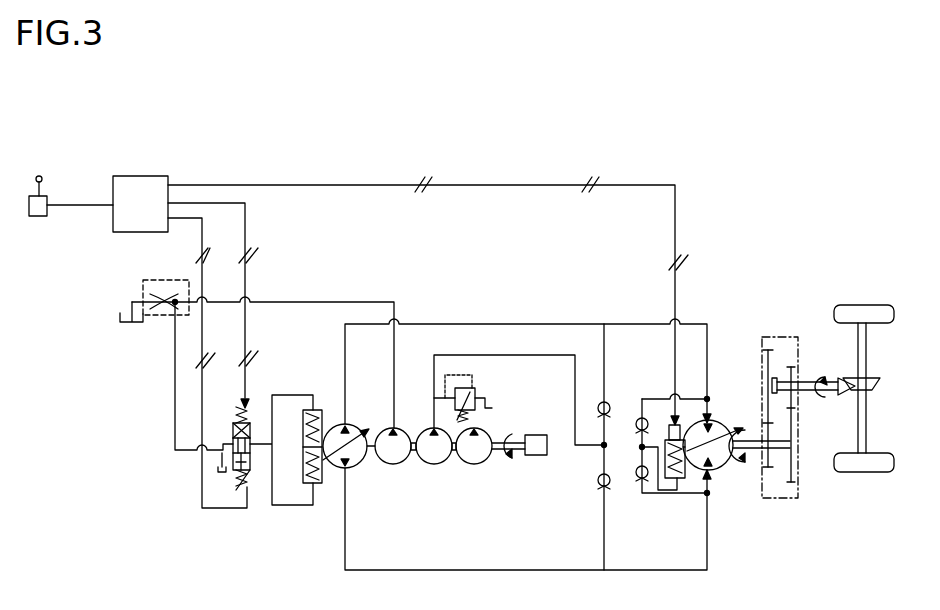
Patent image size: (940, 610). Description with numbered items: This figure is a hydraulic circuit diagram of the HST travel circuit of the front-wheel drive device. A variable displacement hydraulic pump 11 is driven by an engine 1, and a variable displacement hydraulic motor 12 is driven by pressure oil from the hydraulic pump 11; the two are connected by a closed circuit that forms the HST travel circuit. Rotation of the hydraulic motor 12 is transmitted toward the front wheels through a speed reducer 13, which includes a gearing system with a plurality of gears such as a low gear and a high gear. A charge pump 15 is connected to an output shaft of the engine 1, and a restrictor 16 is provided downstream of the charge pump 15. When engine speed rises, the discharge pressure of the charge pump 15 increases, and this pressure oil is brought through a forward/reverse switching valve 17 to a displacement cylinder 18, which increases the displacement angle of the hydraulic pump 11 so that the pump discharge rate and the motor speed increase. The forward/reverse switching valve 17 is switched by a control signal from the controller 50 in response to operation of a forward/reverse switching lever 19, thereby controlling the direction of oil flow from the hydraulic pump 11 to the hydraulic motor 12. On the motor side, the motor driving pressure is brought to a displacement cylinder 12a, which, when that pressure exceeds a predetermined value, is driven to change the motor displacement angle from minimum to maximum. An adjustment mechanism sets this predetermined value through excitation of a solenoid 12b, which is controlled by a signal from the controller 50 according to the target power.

The engine 1 is at (531, 458).
The variable displacement hydraulic pump 11 is at (360, 476).
The variable displacement hydraulic motor 12 is at (712, 470).
The displacement cylinder 12a is at (658, 494).
The solenoid 12b is at (668, 424).
The speed reducer 13 is at (783, 500).
The charge pump 15 is at (407, 464).
The restrictor 16 is at (143, 284).
The forward/reverse switching valve 17 is at (247, 487).
The displacement cylinder 18 is at (320, 410).
The forward/reverse switching lever 19 is at (39, 176).
The controller 50 is at (157, 176).